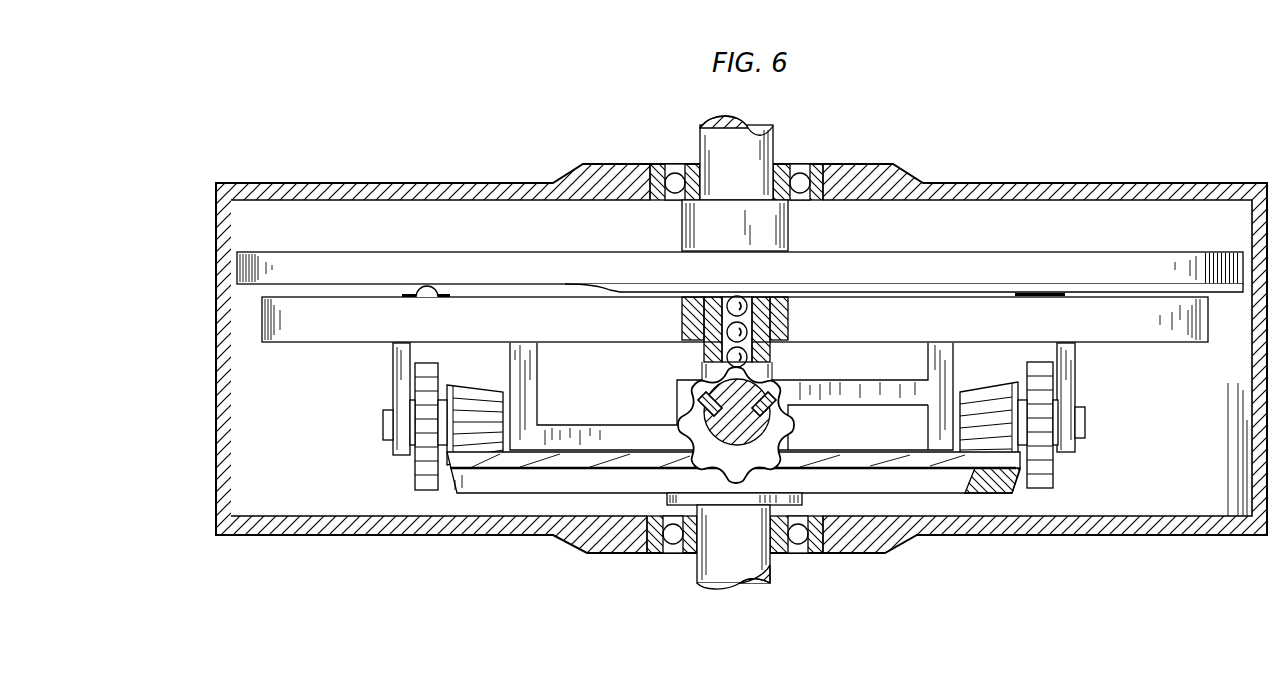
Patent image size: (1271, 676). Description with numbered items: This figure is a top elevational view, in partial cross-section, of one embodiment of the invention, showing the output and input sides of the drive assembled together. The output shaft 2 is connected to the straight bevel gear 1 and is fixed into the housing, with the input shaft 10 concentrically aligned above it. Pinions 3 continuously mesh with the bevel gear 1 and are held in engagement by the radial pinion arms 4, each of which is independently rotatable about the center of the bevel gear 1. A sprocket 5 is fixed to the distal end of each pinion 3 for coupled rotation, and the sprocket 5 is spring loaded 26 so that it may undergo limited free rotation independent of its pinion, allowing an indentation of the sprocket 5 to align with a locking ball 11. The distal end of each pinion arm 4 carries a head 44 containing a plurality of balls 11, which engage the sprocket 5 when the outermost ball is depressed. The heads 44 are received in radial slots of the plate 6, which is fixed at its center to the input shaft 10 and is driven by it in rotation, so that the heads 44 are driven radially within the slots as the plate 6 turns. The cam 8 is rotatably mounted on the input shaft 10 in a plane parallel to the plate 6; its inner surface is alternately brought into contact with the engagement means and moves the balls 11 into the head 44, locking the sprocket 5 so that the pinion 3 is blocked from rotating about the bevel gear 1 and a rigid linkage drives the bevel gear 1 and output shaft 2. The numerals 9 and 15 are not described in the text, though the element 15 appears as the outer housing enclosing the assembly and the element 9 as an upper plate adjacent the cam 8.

The straight bevel gear 1 is at (540, 480).
The output shaft 2 is at (733, 547).
The pinion 3 is at (472, 386).
The radial pinion arm 4 is at (734, 399).
The sprocket 5 is at (1065, 470).
The plate 6 is at (735, 314).
The cam 8 is at (608, 288).
The upper plate 9 is at (438, 247).
The input shaft 10 is at (735, 183).
The balls 11 is at (738, 297).
The housing 15 is at (1000, 180).
The spring loading 26 is at (783, 410).
The head 44 is at (775, 352).